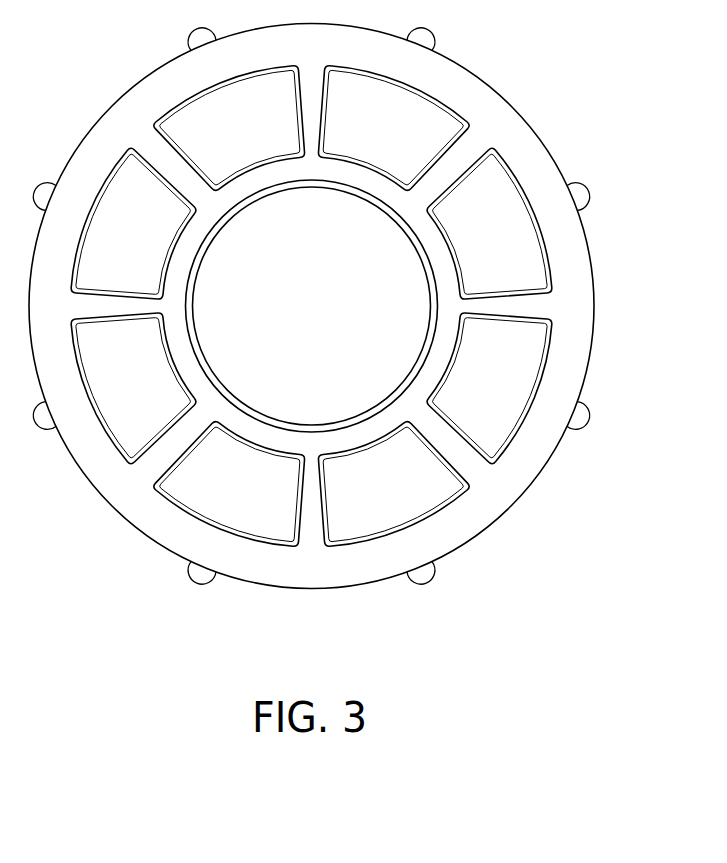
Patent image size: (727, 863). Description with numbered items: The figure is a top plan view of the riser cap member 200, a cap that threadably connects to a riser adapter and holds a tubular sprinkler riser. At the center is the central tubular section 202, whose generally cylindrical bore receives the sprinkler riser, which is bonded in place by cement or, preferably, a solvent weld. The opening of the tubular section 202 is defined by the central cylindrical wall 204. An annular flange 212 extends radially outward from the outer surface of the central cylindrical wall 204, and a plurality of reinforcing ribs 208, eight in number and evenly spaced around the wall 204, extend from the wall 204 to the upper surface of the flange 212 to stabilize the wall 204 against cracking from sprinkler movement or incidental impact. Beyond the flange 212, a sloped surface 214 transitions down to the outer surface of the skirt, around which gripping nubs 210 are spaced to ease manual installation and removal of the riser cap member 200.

The riser cap member 200 is at (334, 343).
The central tubular section 202 is at (331, 318).
The central cylindrical wall 204 is at (352, 433).
The ribs 208 is at (471, 466).
The gripping nubs 210 is at (588, 421).
The annular flange 212 is at (254, 507).
The sloped surface 214 is at (113, 475).